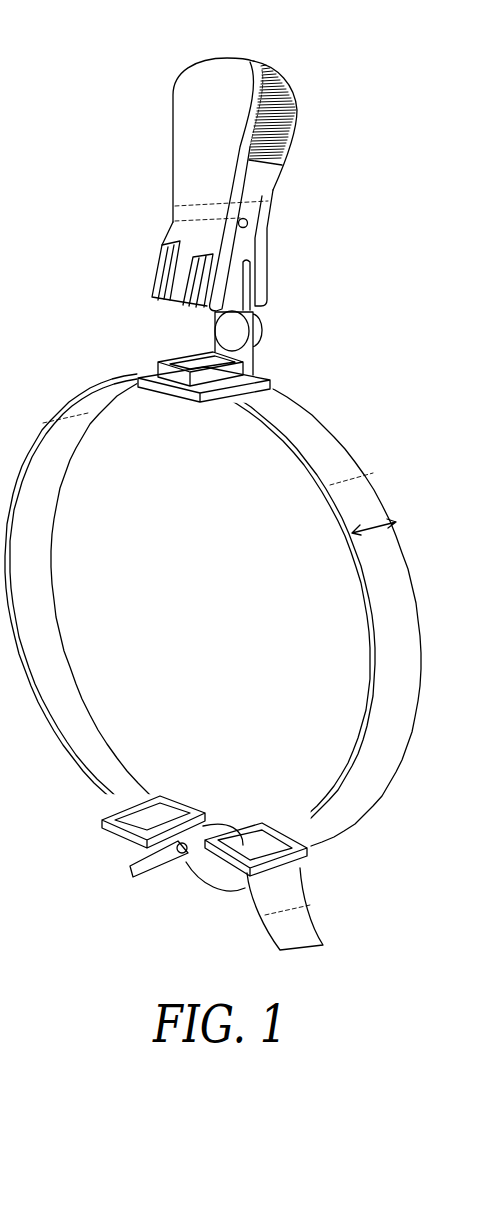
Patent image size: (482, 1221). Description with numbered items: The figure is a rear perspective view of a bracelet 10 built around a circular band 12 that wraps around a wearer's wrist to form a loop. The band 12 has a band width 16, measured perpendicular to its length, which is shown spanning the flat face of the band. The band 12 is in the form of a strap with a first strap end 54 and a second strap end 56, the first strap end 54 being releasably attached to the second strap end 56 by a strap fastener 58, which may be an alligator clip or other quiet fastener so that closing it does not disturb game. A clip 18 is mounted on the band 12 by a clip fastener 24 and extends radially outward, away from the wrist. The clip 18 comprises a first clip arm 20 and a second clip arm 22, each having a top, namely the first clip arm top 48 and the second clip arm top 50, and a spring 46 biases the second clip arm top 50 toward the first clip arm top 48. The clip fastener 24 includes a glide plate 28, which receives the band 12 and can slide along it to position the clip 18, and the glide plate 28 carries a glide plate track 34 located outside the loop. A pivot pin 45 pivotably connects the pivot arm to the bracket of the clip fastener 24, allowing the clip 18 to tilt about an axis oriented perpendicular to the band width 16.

The bracelet 10 is at (377, 246).
The circular band 12 is at (303, 425).
The band width 16 is at (352, 533).
The clip 18 is at (222, 169).
The first clip arm 20 is at (272, 192).
The second clip arm 22 is at (193, 198).
The clip fastener 24 is at (216, 331).
The glide plate 28 is at (157, 387).
The glide plate track 34 is at (157, 368).
The pivot pin 45 is at (222, 327).
The spring 46 is at (250, 227).
The first clip arm top 48 is at (268, 70).
The second clip arm top 50 is at (202, 72).
The first strap end 54 is at (133, 813).
The second strap end 56 is at (307, 930).
The strap fastener 58 is at (147, 894).